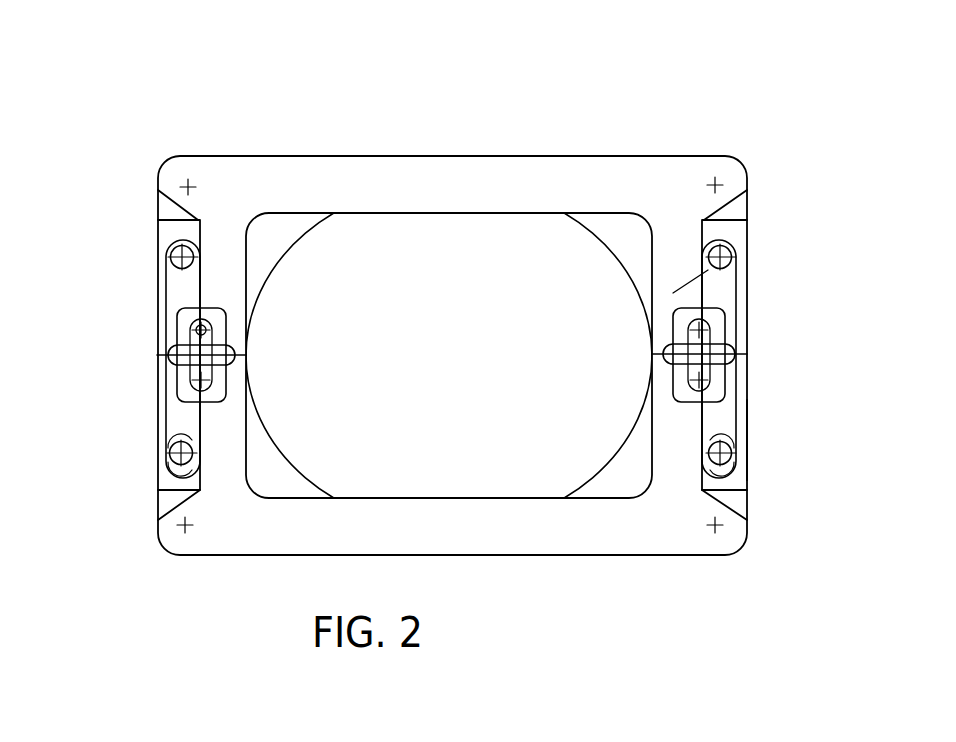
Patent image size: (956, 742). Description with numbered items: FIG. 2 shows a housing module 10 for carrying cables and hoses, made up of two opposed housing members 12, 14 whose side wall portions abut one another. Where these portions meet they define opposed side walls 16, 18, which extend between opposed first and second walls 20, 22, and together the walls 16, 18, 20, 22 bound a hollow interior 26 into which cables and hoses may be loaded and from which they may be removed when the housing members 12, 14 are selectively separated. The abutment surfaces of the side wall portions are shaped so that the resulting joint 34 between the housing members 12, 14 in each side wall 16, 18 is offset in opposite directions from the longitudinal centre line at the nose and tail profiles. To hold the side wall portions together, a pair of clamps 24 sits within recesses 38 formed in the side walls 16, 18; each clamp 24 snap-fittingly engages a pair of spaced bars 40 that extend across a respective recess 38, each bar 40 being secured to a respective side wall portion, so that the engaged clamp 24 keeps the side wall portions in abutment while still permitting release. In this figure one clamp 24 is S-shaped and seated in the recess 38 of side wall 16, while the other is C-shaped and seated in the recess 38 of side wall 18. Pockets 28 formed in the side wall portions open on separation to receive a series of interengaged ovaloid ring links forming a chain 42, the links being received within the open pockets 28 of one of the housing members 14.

The housing module 10 is at (454, 322).
The housing member 12 is at (748, 198).
The housing member 14 is at (748, 420).
The side wall 16 is at (727, 255).
The side wall 18 is at (213, 288).
The first wall 20 is at (465, 200).
The second wall 22 is at (587, 530).
The clamp 24 is at (162, 437).
The hollow interior 26 is at (444, 358).
The pocket 28 is at (213, 333).
The joint 34 is at (250, 355).
The recess 38 is at (168, 480).
The bar 40 is at (170, 255).
The chain 42 is at (206, 325).